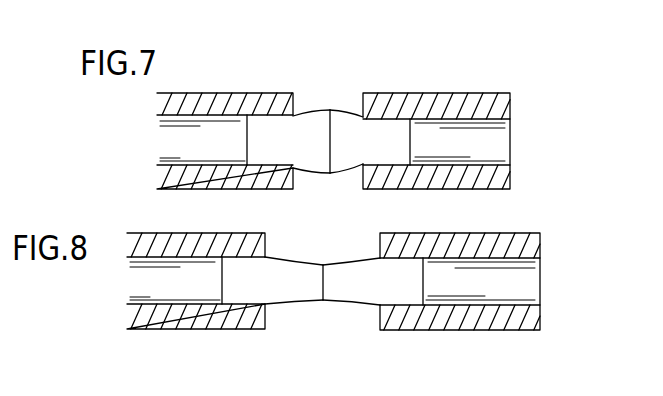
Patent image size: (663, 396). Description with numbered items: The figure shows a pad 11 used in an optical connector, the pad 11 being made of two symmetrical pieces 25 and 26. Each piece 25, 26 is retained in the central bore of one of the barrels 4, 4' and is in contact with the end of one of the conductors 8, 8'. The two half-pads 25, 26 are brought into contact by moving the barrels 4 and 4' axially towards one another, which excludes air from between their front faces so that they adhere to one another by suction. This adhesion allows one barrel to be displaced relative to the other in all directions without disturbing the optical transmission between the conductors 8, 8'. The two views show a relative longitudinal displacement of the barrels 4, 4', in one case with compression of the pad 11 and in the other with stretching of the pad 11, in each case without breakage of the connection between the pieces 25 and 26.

In FIG. 7, the barrel 4 is at (225, 158).
In FIG. 8, the barrel 4 is at (196, 261).
In FIG. 7, the barrel 4' is at (436, 158).
In FIG. 8, the barrel 4' is at (460, 262).
In FIG. 7, the conductor 8 is at (201, 169).
In FIG. 8, the conductor 8 is at (176, 249).
In FIG. 7, the conductor 8' is at (473, 168).
In FIG. 8, the conductor 8' is at (480, 247).
In FIG. 7, the pad 11 is at (330, 98).
In FIG. 8, the pad 11 is at (320, 304).
In FIG. 7, the piece (half-pad) 25 is at (315, 156).
In FIG. 8, the piece (half-pad) 25 is at (300, 275).
In FIG. 7, the piece (half-pad) 26 is at (342, 152).
In FIG. 8, the piece (half-pad) 26 is at (352, 275).